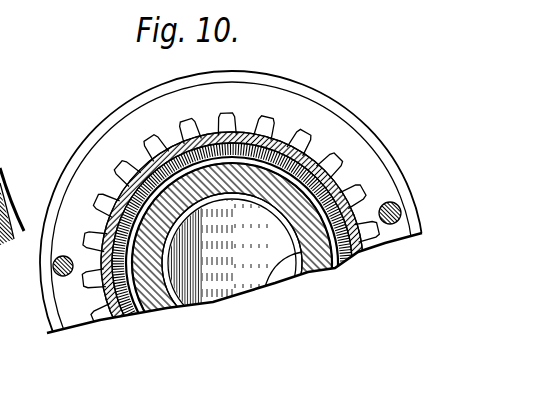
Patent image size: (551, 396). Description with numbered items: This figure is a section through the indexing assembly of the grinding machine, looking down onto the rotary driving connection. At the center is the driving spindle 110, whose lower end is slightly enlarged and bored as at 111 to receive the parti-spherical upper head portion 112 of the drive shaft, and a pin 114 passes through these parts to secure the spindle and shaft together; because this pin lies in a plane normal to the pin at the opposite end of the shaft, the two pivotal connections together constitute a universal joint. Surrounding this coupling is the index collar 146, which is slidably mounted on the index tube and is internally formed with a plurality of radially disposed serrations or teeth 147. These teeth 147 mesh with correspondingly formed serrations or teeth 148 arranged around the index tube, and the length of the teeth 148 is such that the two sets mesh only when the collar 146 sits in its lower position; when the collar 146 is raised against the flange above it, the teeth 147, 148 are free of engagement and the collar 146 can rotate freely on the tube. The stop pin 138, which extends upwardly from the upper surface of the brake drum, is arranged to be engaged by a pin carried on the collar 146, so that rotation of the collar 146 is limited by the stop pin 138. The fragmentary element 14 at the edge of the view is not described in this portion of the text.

The index collar 146 is at (133, 108).
The serrations or teeth 147 is at (110, 170).
The serrations or teeth 148 is at (305, 129).
The stop pin 138 is at (62, 274).
The pin 114 is at (343, 258).
The driving spindle 110 is at (322, 262).
The bore 111 is at (273, 285).
The upper head portion 112 is at (93, 318).
The adjacent member 14 is at (12, 170).